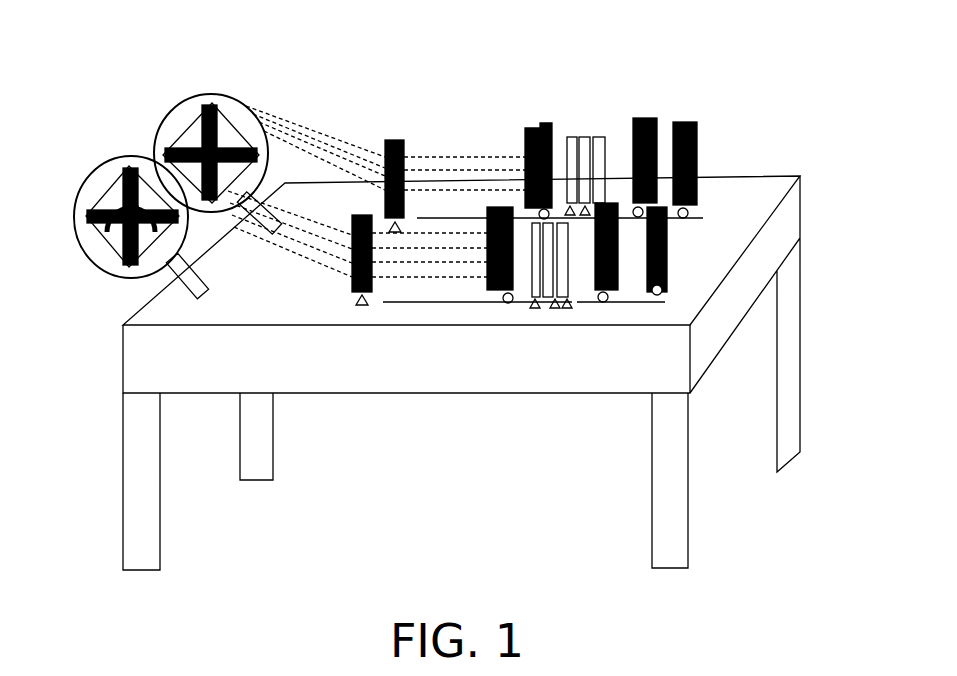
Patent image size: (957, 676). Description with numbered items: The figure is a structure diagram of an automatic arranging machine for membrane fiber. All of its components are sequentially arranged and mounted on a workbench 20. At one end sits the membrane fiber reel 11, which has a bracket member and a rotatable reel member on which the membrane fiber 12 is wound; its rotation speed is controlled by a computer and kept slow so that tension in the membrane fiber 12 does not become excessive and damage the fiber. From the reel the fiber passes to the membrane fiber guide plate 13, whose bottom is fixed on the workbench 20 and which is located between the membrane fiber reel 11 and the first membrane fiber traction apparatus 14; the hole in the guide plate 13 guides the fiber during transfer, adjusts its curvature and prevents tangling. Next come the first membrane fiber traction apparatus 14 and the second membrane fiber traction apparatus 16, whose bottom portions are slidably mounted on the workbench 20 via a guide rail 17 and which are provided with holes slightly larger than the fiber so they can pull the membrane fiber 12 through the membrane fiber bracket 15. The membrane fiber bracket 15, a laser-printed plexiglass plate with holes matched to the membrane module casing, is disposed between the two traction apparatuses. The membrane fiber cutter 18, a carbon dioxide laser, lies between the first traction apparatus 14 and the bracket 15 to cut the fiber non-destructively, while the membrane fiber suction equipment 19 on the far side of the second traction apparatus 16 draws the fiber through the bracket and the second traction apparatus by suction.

The membrane fiber reel 11 is at (213, 93).
The membrane fiber 12 is at (314, 137).
The membrane fiber guide plate 13 is at (394, 140).
The first membrane fiber traction apparatus 14 is at (537, 120).
The membrane fiber bracket 15 is at (588, 132).
The second membrane fiber traction apparatus 16 is at (647, 118).
The guide rail 17 is at (450, 304).
The membrane fiber cutter 18 is at (535, 308).
The membrane fiber suction equipment 19 is at (665, 267).
The workbench 20 is at (758, 190).